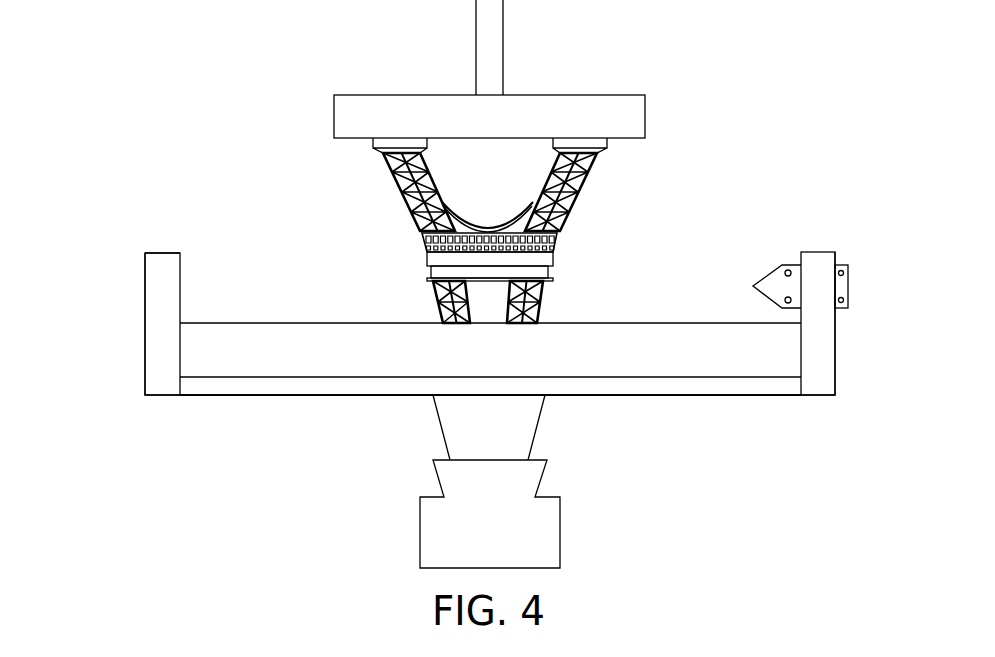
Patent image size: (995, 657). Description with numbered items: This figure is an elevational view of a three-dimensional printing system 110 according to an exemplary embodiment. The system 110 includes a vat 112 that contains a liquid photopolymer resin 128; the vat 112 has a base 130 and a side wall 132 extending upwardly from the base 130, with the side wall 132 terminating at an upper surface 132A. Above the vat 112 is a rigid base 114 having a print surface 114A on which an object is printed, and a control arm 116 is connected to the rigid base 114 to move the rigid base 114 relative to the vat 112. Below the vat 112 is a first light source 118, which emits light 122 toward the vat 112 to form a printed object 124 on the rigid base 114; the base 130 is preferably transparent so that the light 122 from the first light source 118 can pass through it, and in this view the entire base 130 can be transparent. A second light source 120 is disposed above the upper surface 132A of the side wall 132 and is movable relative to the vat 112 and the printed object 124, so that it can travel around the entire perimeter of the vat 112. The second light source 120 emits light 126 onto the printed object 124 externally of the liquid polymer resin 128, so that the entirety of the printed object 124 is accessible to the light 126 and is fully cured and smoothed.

The 3D printing system 110 is at (222, 131).
The vat 112 is at (144, 357).
The rigid base 114 is at (645, 113).
The print surface 114A is at (623, 139).
The control arm 116 is at (503, 37).
The first light source 118 is at (420, 528).
The second light source 120 is at (776, 265).
The light 122 is at (537, 428).
The printed object 124 is at (408, 204).
The light 126 is at (550, 287).
The liquid photopolymer resin 128 is at (247, 348).
The base 130 is at (232, 396).
The side wall 132 is at (145, 296).
The upper surface 132A is at (162, 252).